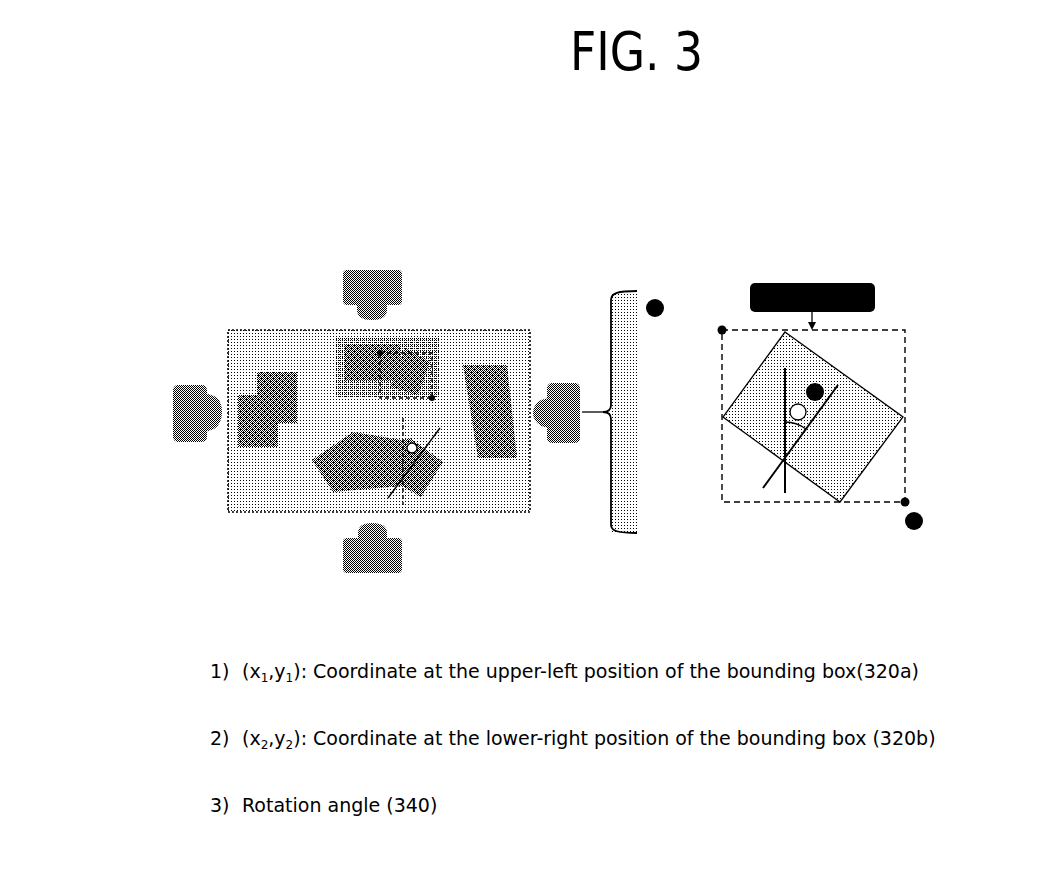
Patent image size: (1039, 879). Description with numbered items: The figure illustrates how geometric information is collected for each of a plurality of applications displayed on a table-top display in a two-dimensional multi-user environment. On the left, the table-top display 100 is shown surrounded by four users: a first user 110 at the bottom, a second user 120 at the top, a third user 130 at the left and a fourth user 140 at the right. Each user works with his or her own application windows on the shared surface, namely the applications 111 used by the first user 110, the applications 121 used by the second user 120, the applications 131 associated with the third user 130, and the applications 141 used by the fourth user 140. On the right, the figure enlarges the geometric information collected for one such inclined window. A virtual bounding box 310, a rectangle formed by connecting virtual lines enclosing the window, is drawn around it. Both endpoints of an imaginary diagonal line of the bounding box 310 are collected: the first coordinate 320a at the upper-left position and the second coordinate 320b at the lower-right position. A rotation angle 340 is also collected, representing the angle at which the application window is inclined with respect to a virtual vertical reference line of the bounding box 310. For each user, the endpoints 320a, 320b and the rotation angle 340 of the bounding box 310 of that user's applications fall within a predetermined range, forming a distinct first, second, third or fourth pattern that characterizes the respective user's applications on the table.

The captured image 100 is at (244, 330).
The first user 110 is at (372, 575).
The applications used by first user 111 is at (428, 506).
The second user 120 is at (372, 268).
The applications used by second user 121 is at (423, 345).
The third user 130 is at (185, 383).
The third object 131 is at (260, 457).
The fourth user 140 is at (557, 382).
The applications used by fourth user 141 is at (490, 362).
The bounding box 310 is at (900, 330).
The first coordinate 320a is at (722, 326).
The second coordinate 320b is at (909, 501).
The rotation angle 340 is at (836, 404).